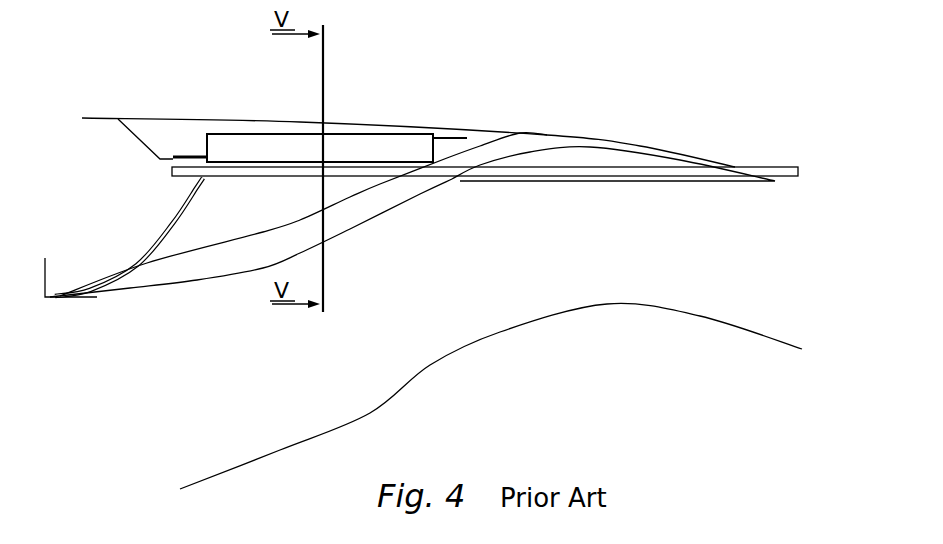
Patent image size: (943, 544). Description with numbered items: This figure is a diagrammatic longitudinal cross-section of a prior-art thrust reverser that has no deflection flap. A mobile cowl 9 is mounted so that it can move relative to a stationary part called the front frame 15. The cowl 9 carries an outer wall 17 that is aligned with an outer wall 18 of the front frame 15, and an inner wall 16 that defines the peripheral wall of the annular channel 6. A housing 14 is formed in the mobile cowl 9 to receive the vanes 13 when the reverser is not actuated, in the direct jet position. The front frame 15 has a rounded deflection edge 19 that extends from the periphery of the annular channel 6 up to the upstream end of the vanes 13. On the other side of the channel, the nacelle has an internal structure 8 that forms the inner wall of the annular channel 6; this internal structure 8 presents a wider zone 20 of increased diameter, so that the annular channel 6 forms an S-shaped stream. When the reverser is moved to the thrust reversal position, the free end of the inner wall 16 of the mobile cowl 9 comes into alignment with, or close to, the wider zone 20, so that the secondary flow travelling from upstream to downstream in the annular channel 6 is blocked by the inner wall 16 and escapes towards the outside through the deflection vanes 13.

The annular channel 6 is at (485, 250).
The internal structure 8 is at (380, 410).
The mobile cowl 9 is at (537, 147).
The vanes 13 is at (377, 153).
The housing 14 is at (255, 218).
The front frame 15 is at (125, 165).
The inner wall 16 is at (345, 213).
The outer wall 17 is at (228, 120).
The outer wall 18 is at (97, 118).
The rounded deflection edge 19 is at (137, 265).
The wider zone 20 is at (429, 350).